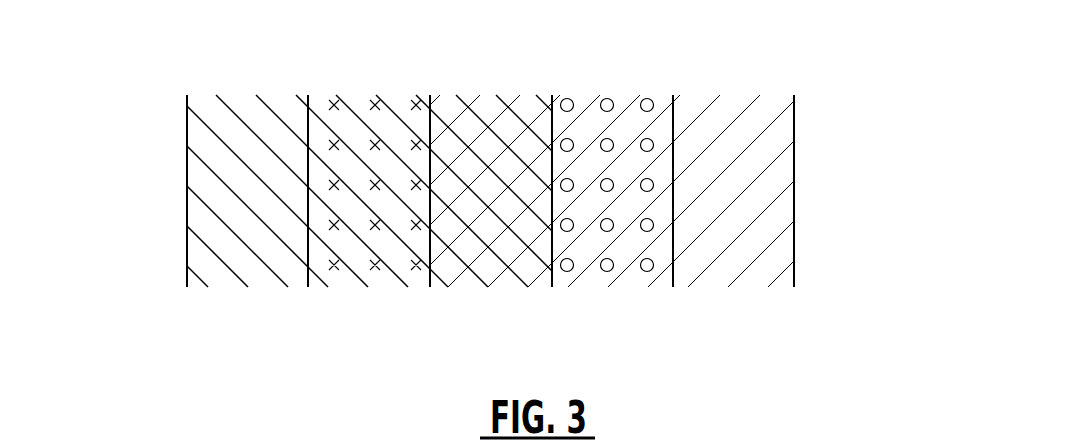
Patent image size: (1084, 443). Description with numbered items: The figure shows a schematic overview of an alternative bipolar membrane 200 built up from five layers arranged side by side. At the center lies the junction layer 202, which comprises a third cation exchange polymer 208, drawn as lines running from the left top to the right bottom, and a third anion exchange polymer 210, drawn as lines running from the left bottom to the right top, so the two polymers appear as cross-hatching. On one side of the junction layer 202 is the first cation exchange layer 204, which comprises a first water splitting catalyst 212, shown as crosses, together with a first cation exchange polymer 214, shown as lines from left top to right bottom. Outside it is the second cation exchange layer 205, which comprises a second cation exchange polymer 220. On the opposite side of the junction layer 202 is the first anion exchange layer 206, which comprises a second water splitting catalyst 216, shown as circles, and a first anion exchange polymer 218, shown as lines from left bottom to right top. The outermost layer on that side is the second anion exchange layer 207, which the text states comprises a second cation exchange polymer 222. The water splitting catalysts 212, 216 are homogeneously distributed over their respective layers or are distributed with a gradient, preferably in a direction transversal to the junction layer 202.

The alternative bipolar membrane 200 is at (200, 64).
The junction layer 202 is at (483, 308).
The first cation exchange layer 204 is at (355, 314).
The second cation exchange layer 205 is at (223, 313).
The first anion exchange layer 206 is at (602, 310).
The second anion exchange layer 207 is at (761, 314).
The third cation exchange polymer 208 is at (538, 255).
The third anion exchange polymer 210 is at (508, 127).
The first water splitting catalyst 212 is at (333, 100).
The first cation exchange polymer 214 is at (393, 108).
The second water splitting catalyst 216 is at (647, 98).
The first anion exchange polymer 218 is at (627, 103).
The second cation exchange polymer 220 is at (213, 167).
The second cation exchange polymer 222 is at (772, 198).